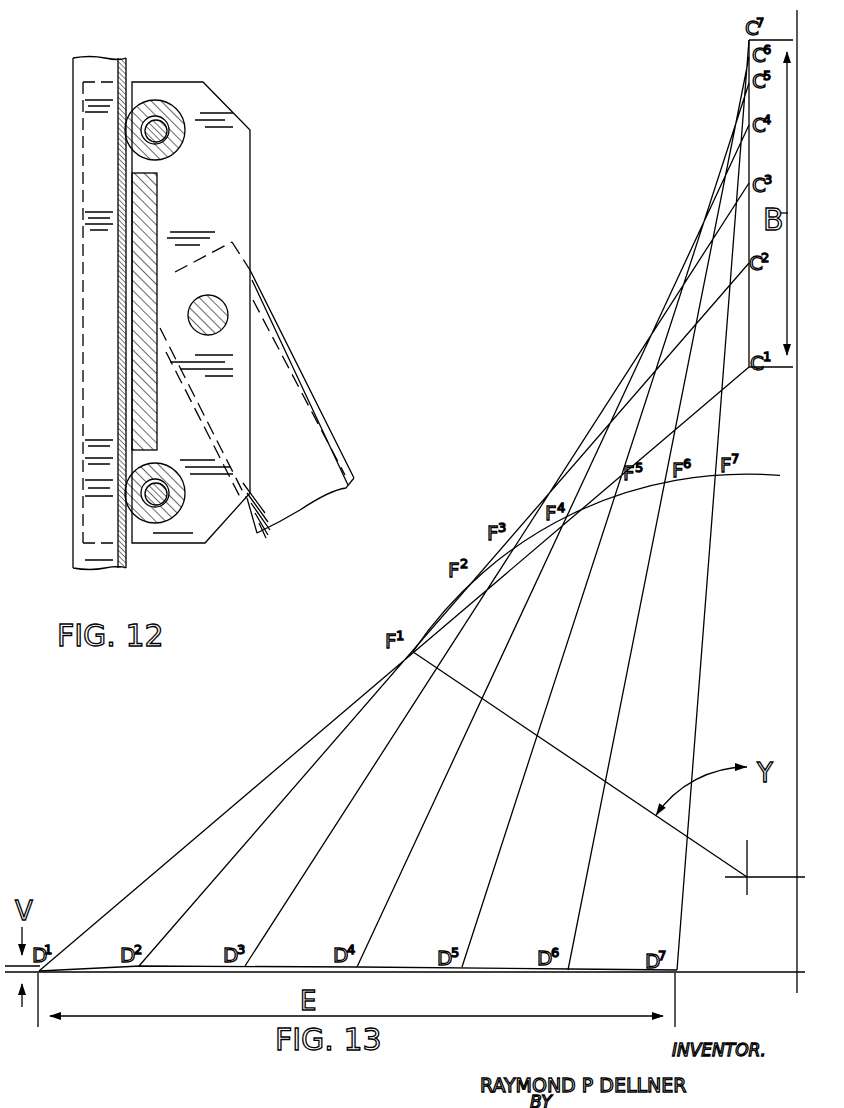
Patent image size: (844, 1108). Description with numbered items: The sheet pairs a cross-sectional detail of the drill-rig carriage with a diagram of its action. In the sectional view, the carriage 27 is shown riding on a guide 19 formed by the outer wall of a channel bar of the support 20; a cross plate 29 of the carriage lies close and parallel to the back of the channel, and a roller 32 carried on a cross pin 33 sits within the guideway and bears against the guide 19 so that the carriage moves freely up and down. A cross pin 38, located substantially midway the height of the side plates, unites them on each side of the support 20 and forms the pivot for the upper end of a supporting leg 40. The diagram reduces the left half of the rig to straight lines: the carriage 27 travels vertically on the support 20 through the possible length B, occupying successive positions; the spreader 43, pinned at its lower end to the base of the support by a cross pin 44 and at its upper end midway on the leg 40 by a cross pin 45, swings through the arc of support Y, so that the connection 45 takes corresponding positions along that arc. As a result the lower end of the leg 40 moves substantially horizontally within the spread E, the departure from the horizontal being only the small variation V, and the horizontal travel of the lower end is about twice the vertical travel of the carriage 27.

In FIG. 12, the guide 19 is at (118, 247).
In FIG. 12, the cross plate 29 is at (158, 186).
In FIG. 12, the roller 32 is at (185, 135).
In FIG. 12, the cross pin 33 is at (160, 125).
In FIG. 12, the cross pin 38 is at (208, 296).
In FIG. 13, the support 20 is at (797, 420).
In FIG. 13, the carriage 27 is at (770, 369).
In FIG. 13, the supporting leg 40 is at (245, 796).
In FIG. 13, the spreader 43 is at (577, 763).
In FIG. 13, the cross pin 44 is at (747, 877).
In FIG. 13, the cross pin 45 is at (414, 645).